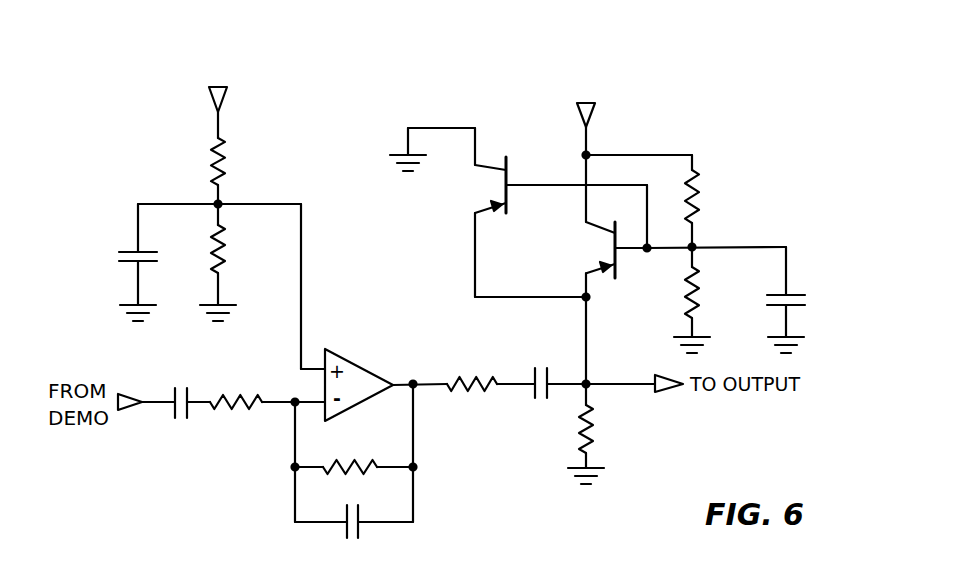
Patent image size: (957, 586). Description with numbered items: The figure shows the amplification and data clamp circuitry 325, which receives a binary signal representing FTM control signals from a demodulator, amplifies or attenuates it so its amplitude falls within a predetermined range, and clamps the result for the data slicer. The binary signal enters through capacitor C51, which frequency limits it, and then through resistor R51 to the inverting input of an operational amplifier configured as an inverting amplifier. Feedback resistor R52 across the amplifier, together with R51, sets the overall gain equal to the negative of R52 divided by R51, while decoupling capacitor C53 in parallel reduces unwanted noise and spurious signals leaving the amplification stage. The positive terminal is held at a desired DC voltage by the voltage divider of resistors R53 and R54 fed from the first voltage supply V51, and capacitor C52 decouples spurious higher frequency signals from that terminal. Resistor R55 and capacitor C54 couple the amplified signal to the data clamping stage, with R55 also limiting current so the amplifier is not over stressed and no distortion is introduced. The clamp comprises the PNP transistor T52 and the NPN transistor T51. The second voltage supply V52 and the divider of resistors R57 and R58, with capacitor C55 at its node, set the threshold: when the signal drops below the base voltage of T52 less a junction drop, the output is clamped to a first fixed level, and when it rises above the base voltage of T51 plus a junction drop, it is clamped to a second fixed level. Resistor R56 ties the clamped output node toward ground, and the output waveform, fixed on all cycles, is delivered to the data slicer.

The amplification and data clamp circuitry 325 is at (367, 57).
The first voltage supply V51 is at (219, 96).
The second voltage supply V52 is at (584, 113).
The resistor R51 is at (252, 390).
The resistor R52 is at (354, 453).
The resistor R53 is at (242, 171).
The resistor R54 is at (238, 262).
The resistor R55 is at (491, 371).
The resistor R56 is at (606, 434).
The resistor R57 is at (716, 201).
The resistor R58 is at (712, 300).
The capacitor C51 is at (182, 389).
The capacitor C52 is at (160, 262).
The decoupling capacitor C53 is at (354, 510).
The capacitor C54 is at (554, 371).
The capacitor C55 is at (808, 300).
The NPN transistor T51 is at (599, 259).
The PNP transistor T52 is at (518, 212).